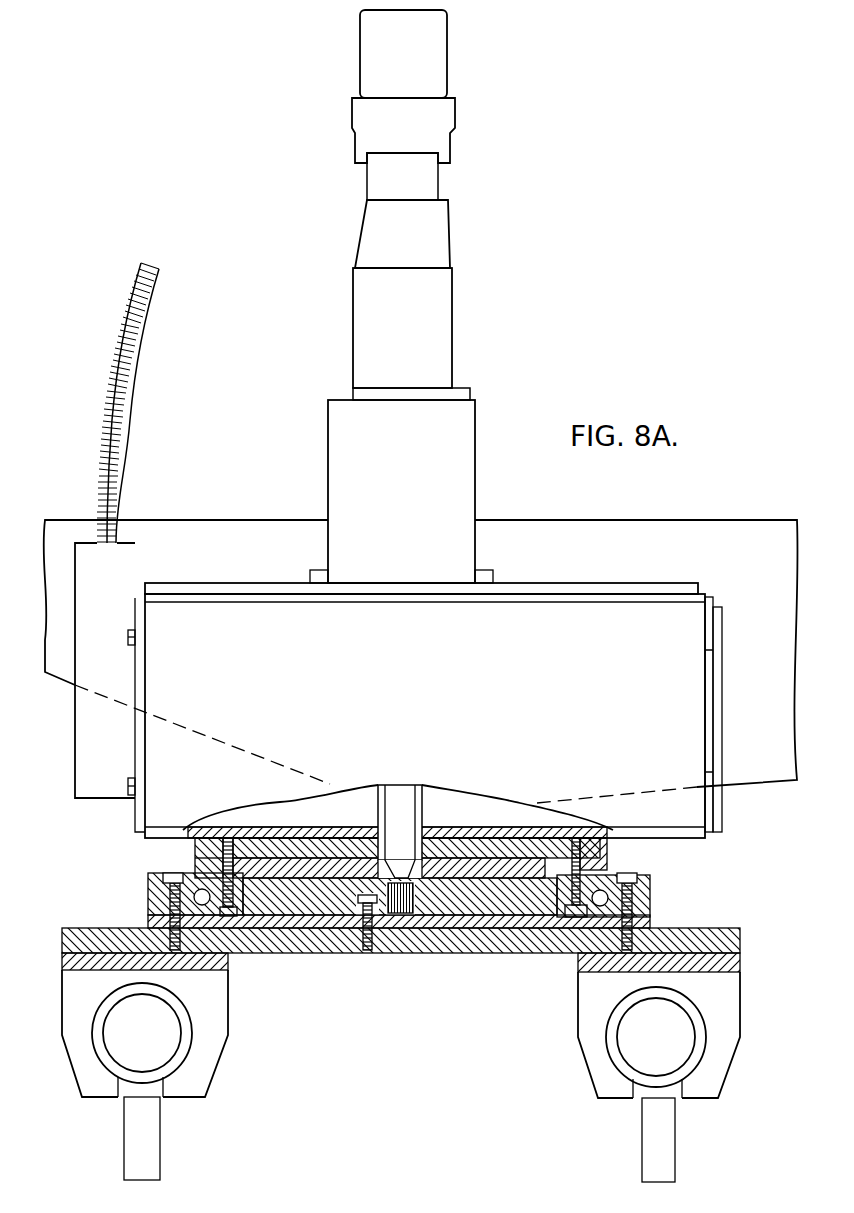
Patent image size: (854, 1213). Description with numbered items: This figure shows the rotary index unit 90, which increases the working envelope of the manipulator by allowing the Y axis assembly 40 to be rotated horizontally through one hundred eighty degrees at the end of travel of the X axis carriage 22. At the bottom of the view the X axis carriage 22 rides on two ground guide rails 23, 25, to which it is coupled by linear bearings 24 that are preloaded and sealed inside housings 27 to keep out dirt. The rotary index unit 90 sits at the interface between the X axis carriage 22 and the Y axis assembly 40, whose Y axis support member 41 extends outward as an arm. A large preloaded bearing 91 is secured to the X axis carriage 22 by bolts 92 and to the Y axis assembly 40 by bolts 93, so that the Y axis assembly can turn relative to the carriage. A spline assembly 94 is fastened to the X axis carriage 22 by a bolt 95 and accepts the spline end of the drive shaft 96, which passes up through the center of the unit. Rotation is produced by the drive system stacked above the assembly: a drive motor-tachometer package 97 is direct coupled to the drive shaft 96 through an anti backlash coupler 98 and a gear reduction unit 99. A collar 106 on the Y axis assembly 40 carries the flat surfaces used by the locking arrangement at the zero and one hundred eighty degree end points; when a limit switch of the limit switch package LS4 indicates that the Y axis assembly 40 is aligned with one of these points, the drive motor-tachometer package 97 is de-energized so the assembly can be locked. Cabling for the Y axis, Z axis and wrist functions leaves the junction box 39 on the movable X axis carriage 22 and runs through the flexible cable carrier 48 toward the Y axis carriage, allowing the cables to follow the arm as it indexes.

The limit switch package LS4 is at (432, 57).
The drive motor-tachometer package 97 is at (435, 237).
The anti backlash coupler 98 is at (433, 308).
The gear reduction unit 99 is at (347, 440).
The cable carrier 48 is at (130, 328).
The junction box 39 is at (95, 780).
The Y axis support member 41 is at (735, 540).
The Y axis assembly 40 is at (772, 822).
The drive shaft 96 is at (405, 800).
The spline assembly 94 is at (383, 935).
The bolt 95 is at (365, 940).
The bolts 93 is at (228, 843).
The collar 106 is at (600, 852).
The large preloaded bearing 91 is at (200, 888).
The bolts 92 is at (165, 878).
The rotary index unit 90 is at (122, 914).
The X axis carriage 22 is at (683, 930).
The housings 27 is at (215, 1020).
The linear bearings 24 is at (187, 1055).
The guide rail 23 is at (118, 1048).
The guide rail 25 is at (686, 1028).